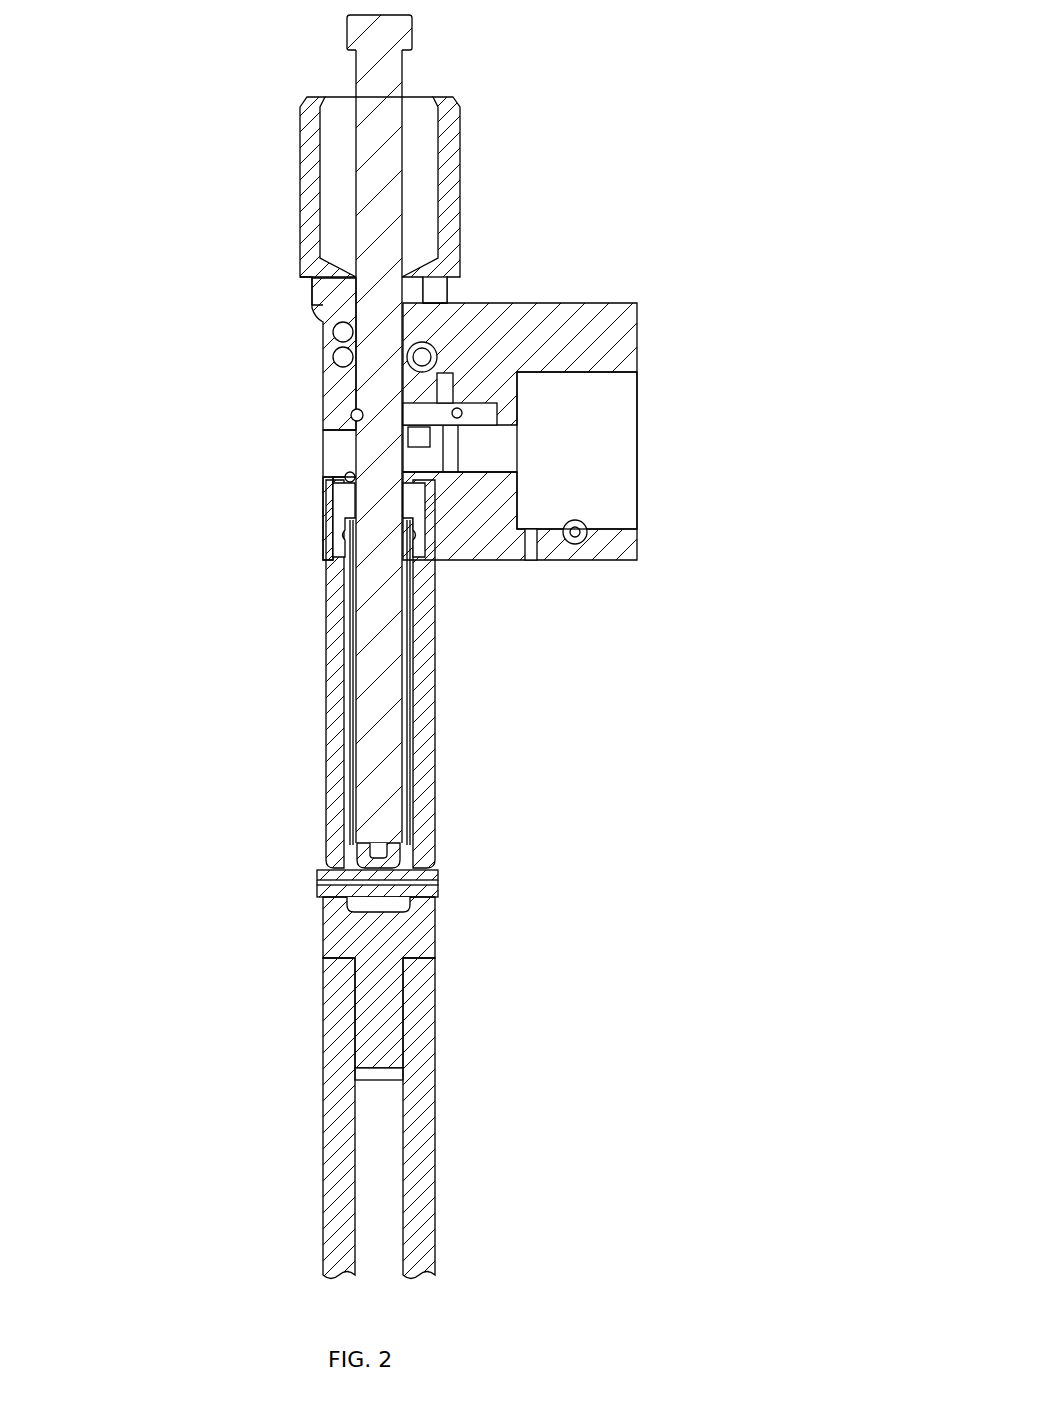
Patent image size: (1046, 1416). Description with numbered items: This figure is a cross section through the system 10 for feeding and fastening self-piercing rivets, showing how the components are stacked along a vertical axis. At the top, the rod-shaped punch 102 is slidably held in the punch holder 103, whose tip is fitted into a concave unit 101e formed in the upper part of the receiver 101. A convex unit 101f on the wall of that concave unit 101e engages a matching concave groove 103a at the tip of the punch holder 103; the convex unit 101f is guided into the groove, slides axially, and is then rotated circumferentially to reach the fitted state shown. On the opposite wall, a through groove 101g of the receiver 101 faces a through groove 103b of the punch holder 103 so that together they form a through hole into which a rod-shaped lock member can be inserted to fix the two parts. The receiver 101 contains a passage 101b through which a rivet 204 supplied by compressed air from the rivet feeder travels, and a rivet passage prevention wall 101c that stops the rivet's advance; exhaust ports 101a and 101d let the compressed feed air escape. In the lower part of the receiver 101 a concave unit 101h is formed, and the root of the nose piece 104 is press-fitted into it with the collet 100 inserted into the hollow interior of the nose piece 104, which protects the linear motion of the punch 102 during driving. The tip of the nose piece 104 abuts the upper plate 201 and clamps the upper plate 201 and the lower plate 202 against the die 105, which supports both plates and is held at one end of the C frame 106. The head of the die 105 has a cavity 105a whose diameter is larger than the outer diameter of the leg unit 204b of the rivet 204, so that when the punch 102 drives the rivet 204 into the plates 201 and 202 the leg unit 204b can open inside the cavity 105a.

The system for feeding and fastening rivets 10 is at (590, 90).
The collet 100 is at (360, 590).
The receiver 101 is at (470, 565).
The exhaust port 101a is at (335, 457).
The passage 101b is at (588, 436).
The rivet passage prevention wall 101c is at (352, 414).
The exhaust port 101d is at (530, 560).
The concave unit 101e is at (340, 290).
The convex unit 101f is at (345, 333).
The through groove 101g is at (437, 357).
The concave unit 101h is at (345, 555).
The punch 102 is at (412, 35).
The punch holder 103 is at (460, 183).
The concave groove 103a is at (345, 357).
The through groove 103b is at (447, 303).
The nose piece 104 is at (437, 777).
The die 105 is at (437, 935).
The cavity 105a is at (360, 905).
The C frame 106 is at (437, 1090).
The upper plate 201 is at (440, 875).
The lower plate 202 is at (440, 891).
The self-piercing rivet 204 is at (357, 831).
The leg unit 204b is at (395, 846).